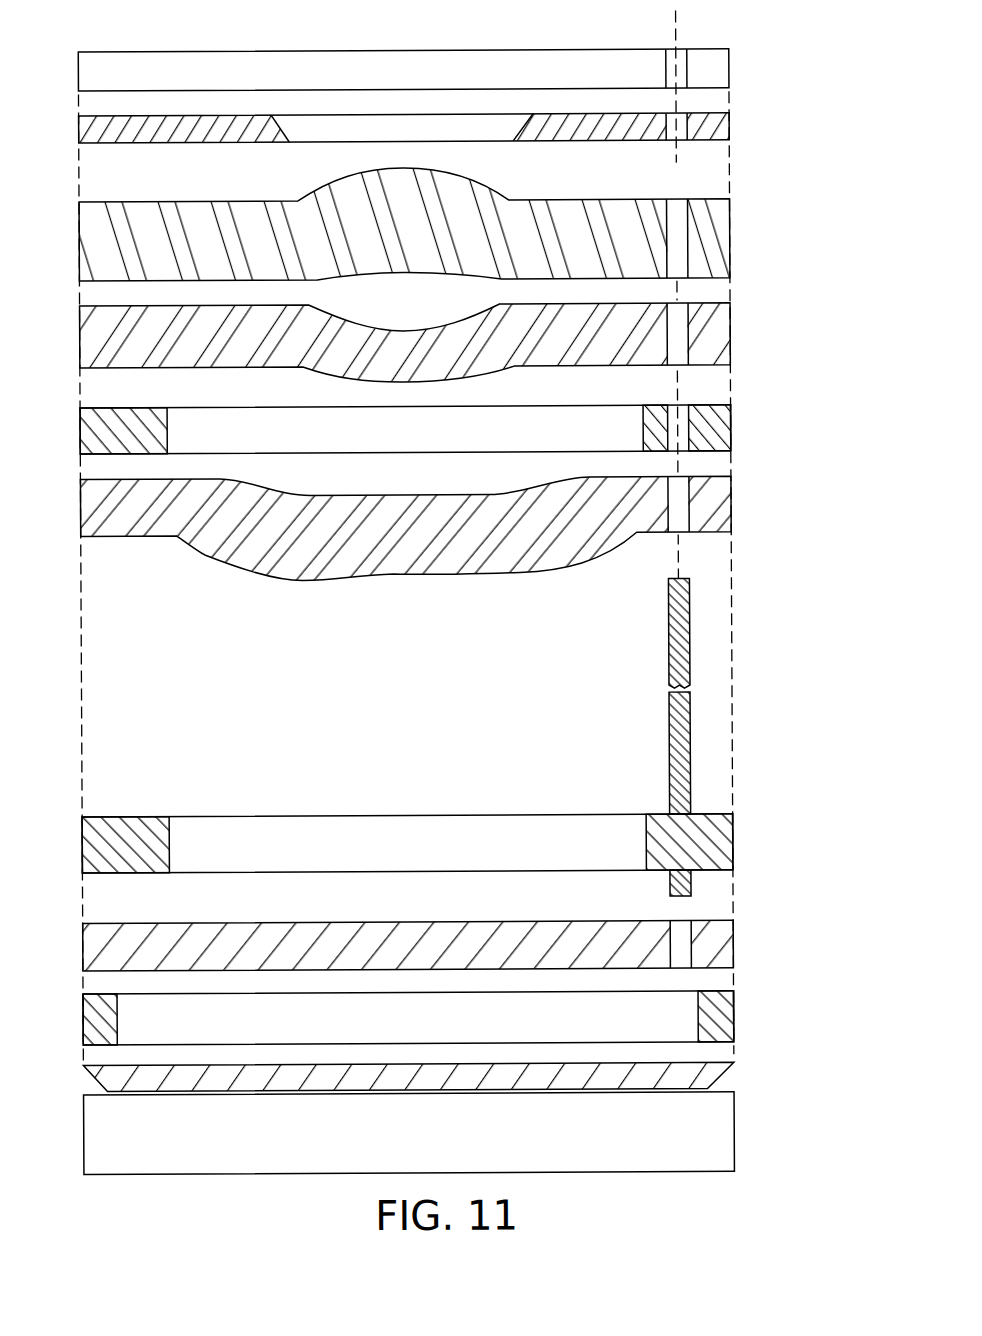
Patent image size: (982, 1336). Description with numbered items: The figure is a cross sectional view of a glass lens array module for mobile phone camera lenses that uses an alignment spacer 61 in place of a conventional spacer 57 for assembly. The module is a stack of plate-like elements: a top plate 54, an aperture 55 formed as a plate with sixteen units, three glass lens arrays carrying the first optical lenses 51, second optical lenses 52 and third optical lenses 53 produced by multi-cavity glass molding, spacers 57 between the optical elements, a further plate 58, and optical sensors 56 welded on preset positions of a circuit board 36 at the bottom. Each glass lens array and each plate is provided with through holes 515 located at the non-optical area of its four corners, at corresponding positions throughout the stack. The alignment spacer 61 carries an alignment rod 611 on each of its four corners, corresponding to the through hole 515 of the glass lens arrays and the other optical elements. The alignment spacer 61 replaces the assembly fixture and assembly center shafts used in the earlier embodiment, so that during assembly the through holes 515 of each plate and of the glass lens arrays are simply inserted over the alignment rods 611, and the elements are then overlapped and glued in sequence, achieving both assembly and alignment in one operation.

The circuit board 36 is at (721, 1134).
The first optical lenses 51 is at (718, 249).
The second optical lenses 52 is at (718, 337).
The third optical lenses 53 is at (718, 511).
The cover plate 54 is at (718, 73).
The aperture 55 is at (728, 129).
The optical sensors 56 is at (720, 1074).
The spacer 57 is at (726, 427).
The spacer plate 58 is at (718, 944).
The alignment spacer 61 is at (719, 842).
The alignment rod 611 is at (676, 647).
The through hole 515 is at (672, 60).